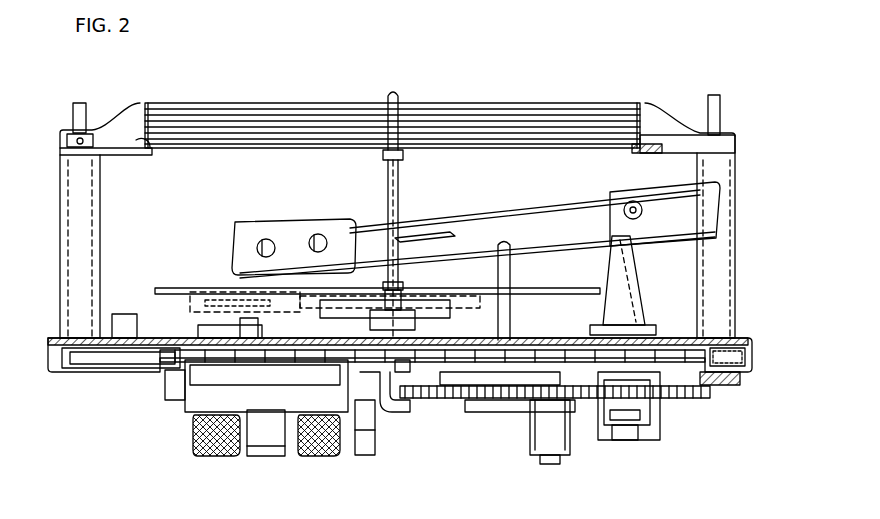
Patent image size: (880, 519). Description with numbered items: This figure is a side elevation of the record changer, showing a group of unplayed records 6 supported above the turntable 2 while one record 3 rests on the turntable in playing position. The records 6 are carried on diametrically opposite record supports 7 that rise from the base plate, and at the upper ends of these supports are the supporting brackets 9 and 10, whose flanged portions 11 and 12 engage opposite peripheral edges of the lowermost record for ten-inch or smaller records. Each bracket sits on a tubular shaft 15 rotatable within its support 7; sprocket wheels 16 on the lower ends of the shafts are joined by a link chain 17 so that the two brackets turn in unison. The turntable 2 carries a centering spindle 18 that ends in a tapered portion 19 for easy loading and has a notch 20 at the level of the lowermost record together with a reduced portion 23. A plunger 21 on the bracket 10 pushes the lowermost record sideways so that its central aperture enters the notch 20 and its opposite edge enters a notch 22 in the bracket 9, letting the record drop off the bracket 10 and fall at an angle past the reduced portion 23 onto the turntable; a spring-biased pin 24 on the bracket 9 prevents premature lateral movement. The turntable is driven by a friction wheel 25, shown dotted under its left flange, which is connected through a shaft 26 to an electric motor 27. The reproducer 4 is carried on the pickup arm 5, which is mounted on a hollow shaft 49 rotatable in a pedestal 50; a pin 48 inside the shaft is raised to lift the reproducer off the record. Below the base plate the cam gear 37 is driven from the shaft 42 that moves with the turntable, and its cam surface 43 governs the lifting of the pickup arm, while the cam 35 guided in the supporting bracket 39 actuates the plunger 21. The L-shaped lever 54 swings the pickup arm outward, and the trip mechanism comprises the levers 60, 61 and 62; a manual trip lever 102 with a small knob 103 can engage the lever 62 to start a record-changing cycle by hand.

The turntable 2 is at (190, 302).
The record 3 is at (155, 290).
The reproducer 4 is at (254, 224).
The pickup arm 5 is at (503, 216).
The unplayed records 6 is at (590, 106).
The record supports 7 is at (60, 182).
The supporting bracket 9 is at (74, 109).
The supporting bracket 10 is at (719, 108).
The flanged portion 11 is at (152, 152).
The flanged portion 12 is at (620, 150).
The tubular shaft 15 is at (68, 237).
The sprocket wheel 16 is at (50, 352).
The link chain 17 is at (138, 365).
The centering spindle 18 is at (399, 278).
The tapered portion 19 is at (392, 100).
The notch 20 is at (394, 150).
The plunger 21 is at (646, 150).
The notch 22 is at (133, 146).
The reduced portion 23 is at (398, 190).
The spring-biased pin 24 is at (150, 150).
The friction wheel 25 is at (204, 300).
The shaft 26 is at (246, 340).
The electric motor 27 is at (208, 452).
The cam 35 is at (712, 386).
The cam gear 37 is at (688, 398).
The supporting bracket 39 is at (740, 375).
The shaft 42 is at (388, 430).
The cam surface 43 is at (522, 432).
The pin 48 is at (634, 432).
The hollow shaft 49 is at (636, 414).
The pedestal 50 is at (628, 266).
The L-shaped lever 54 is at (412, 430).
The lever 60 is at (588, 432).
The lever 61 is at (474, 345).
The lever 62 is at (462, 425).
The manual trip lever 102 is at (200, 340).
The knob 103 is at (112, 320).